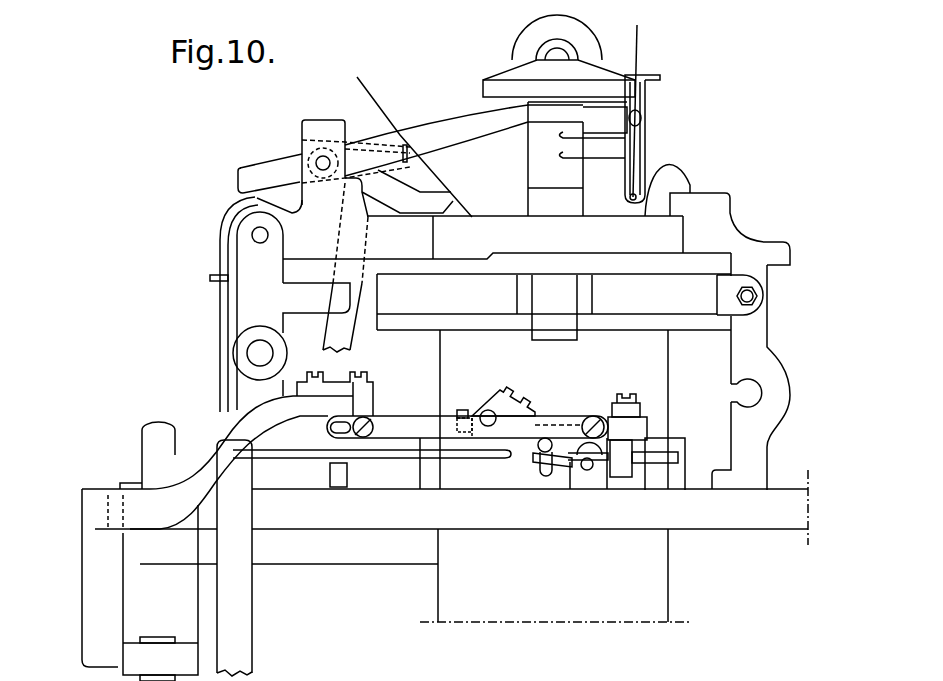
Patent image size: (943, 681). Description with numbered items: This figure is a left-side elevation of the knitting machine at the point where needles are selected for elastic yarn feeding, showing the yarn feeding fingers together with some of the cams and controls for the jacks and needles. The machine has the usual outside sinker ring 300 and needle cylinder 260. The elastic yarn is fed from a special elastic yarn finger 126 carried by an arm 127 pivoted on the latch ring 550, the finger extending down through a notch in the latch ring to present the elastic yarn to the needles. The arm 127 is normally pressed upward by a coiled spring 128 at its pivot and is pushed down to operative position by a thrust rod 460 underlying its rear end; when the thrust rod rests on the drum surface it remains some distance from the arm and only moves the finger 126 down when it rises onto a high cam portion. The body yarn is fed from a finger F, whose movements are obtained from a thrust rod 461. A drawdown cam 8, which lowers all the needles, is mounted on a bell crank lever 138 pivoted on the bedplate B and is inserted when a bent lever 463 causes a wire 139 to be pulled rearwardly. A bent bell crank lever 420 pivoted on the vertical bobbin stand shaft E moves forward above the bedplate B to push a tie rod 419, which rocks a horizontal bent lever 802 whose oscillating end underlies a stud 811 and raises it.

The arm 127 is at (470, 123).
The coiled spring 128 is at (383, 143).
The yarn finger F is at (388, 178).
The elastic yarn finger 126 is at (633, 163).
The latch ring 550 is at (718, 235).
The thrust rod 460 is at (223, 317).
The thrust rod 461 is at (340, 330).
The outside sinker ring 300 is at (677, 300).
The needle cylinder 260 is at (633, 360).
The drawdown cam 8 is at (488, 402).
The stud 811 is at (547, 440).
The bent lever 802 is at (563, 460).
The bell crank lever 138 is at (623, 437).
The tie rod 419 is at (388, 425).
The wire 139 is at (407, 455).
The bent bell crank lever 420 is at (208, 467).
The bobbin stand shaft E is at (157, 452).
The bent lever 463 is at (237, 597).
The bedplate B is at (720, 517).